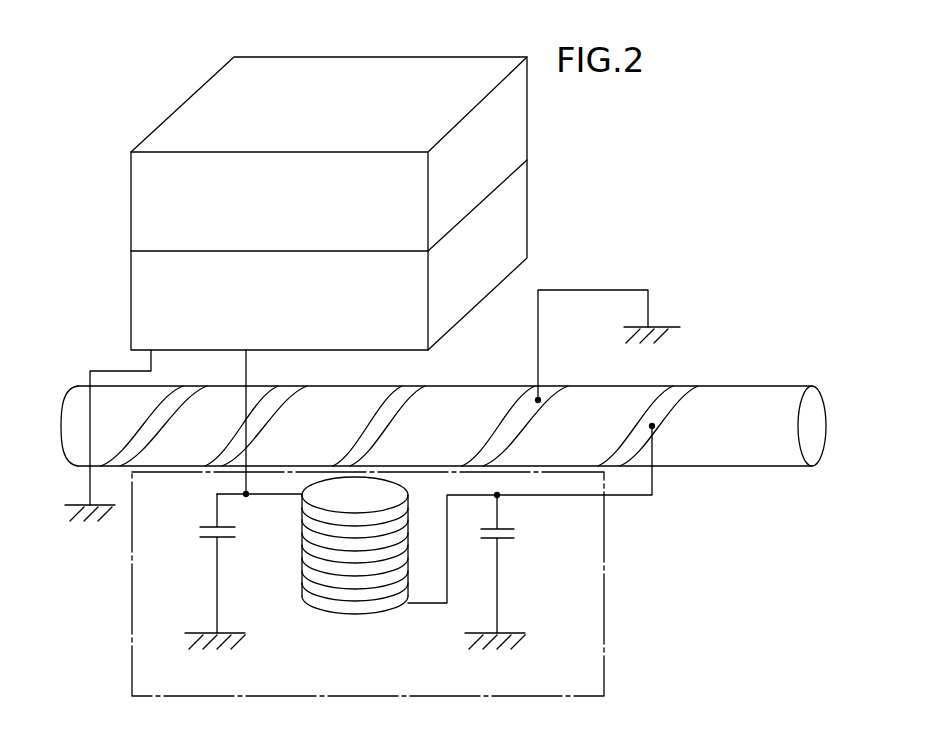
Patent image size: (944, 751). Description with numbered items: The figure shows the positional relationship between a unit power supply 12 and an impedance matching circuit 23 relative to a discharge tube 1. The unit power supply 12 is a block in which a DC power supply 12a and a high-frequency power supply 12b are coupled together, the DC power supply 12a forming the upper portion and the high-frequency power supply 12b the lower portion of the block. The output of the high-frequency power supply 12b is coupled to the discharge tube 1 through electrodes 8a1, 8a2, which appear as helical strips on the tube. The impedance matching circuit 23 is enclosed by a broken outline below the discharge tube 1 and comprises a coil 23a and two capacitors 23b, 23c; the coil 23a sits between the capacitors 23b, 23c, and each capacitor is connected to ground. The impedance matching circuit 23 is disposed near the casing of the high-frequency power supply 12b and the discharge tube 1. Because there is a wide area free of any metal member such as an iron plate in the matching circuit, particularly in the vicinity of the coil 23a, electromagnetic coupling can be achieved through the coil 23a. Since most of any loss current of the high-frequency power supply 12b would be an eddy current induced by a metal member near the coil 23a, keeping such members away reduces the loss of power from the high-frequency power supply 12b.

The discharge tube 1 is at (757, 389).
The unit power supply 12 is at (354, 181).
The DC power supply 12a is at (527, 103).
The high-frequency power supply 12b is at (527, 203).
The electrode 8a1 is at (540, 411).
The electrode 8a2 is at (677, 402).
The impedance matching circuit 23 is at (605, 584).
The coil 23a is at (347, 616).
The capacitor 23b is at (209, 526).
The capacitor 23c is at (510, 527).